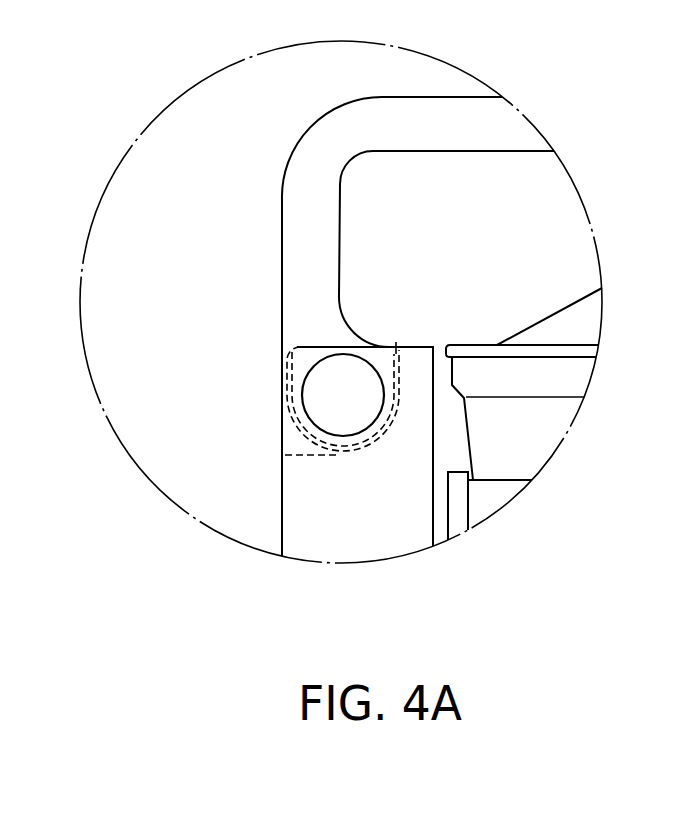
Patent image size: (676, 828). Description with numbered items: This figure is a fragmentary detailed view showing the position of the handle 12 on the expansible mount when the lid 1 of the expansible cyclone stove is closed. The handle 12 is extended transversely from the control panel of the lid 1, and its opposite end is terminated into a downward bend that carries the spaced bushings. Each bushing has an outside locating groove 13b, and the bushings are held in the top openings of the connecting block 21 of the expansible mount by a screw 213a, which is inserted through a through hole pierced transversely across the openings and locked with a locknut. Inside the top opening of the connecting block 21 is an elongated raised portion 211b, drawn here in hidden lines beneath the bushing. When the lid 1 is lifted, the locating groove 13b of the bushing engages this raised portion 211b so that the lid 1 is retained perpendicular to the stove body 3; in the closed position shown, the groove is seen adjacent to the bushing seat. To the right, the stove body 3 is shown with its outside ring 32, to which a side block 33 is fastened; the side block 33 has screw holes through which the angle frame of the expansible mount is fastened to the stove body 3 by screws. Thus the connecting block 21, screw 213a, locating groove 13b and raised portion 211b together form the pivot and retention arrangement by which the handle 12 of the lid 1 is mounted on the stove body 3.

The lid 1 is at (555, 325).
The stove body 3 is at (542, 432).
The handle 12 is at (297, 230).
The locating groove 13b is at (285, 382).
The connecting block 21 is at (313, 547).
The outside ring 32 is at (498, 498).
The side block 33 is at (457, 527).
The elongated raised portion 211b is at (340, 452).
The screw 213a is at (327, 400).